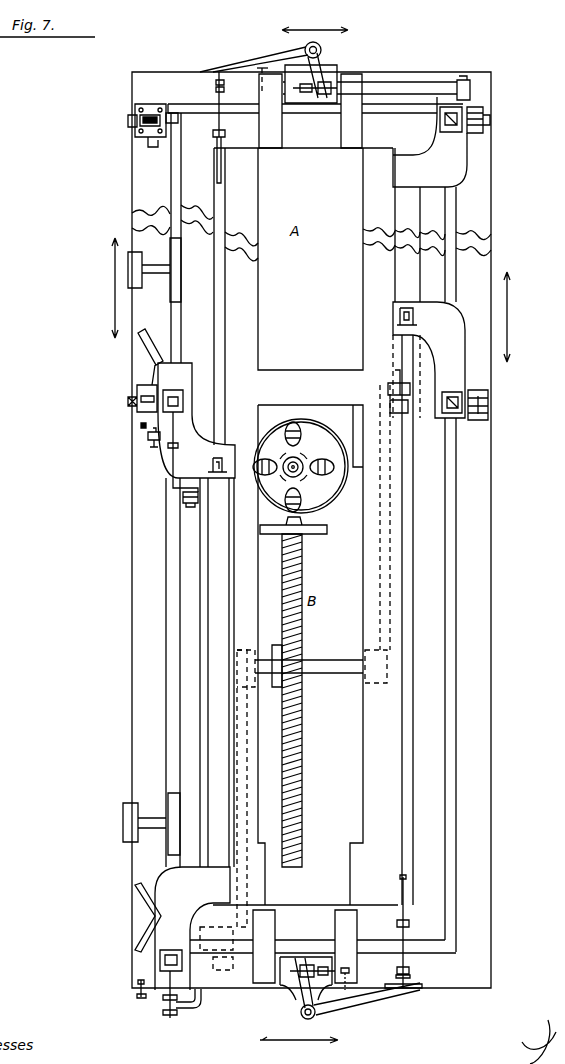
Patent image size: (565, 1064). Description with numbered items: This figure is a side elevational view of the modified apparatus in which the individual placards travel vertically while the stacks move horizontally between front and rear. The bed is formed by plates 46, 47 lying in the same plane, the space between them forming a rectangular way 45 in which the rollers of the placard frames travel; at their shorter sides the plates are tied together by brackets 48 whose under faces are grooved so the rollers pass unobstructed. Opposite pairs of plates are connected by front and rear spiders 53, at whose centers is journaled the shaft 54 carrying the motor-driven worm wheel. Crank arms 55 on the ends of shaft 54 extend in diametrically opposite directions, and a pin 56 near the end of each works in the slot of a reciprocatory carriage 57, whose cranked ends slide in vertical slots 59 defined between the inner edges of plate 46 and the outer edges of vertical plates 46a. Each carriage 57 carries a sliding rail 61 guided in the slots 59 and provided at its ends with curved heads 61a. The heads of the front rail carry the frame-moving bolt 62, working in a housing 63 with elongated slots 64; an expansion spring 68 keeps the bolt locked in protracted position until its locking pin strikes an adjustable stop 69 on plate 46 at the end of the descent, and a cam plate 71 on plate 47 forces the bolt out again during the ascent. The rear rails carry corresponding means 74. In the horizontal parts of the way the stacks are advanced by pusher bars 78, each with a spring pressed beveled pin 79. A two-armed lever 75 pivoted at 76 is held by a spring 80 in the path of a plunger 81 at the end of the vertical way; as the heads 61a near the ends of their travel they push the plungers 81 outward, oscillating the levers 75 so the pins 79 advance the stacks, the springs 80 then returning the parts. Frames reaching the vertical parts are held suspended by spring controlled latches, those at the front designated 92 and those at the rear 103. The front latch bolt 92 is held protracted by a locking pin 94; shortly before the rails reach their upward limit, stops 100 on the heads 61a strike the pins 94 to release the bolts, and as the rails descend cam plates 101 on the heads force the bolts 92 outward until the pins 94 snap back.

The rectangular way 45 is at (447, 788).
The plate 46 is at (425, 713).
The vertical plate 46a is at (378, 797).
The plate 47 is at (472, 646).
The bracket 48 is at (268, 127).
The spider 53 is at (240, 748).
The shaft 54 is at (330, 667).
The crank arm 55 is at (383, 617).
The pin 56 is at (395, 390).
The reciprocatory carriage 57 is at (413, 420).
The vertical slot 59 is at (407, 572).
The sliding bar or rail 61 is at (213, 577).
The curved head 61a is at (448, 178).
The bolt 62 is at (183, 402).
The housing 63 is at (483, 410).
The slot 64 is at (217, 95).
The expansion spring 68 is at (133, 124).
The adjustable stop 69 is at (183, 503).
The cam plate 71 is at (127, 810).
The frame-moving means 74 is at (483, 131).
The two-armed lever 75 is at (250, 62).
The pivot 76 is at (320, 47).
The pusher bar 78 is at (387, 92).
The spring pressed beveled pin 79 is at (472, 92).
The spring 80 is at (262, 85).
The plunger 81 is at (403, 877).
The latch bolt 92 is at (170, 117).
The locking pin 94 is at (143, 426).
The stop 100 is at (152, 437).
The cam plate 101 is at (145, 343).
The rear latch 103 is at (483, 112).